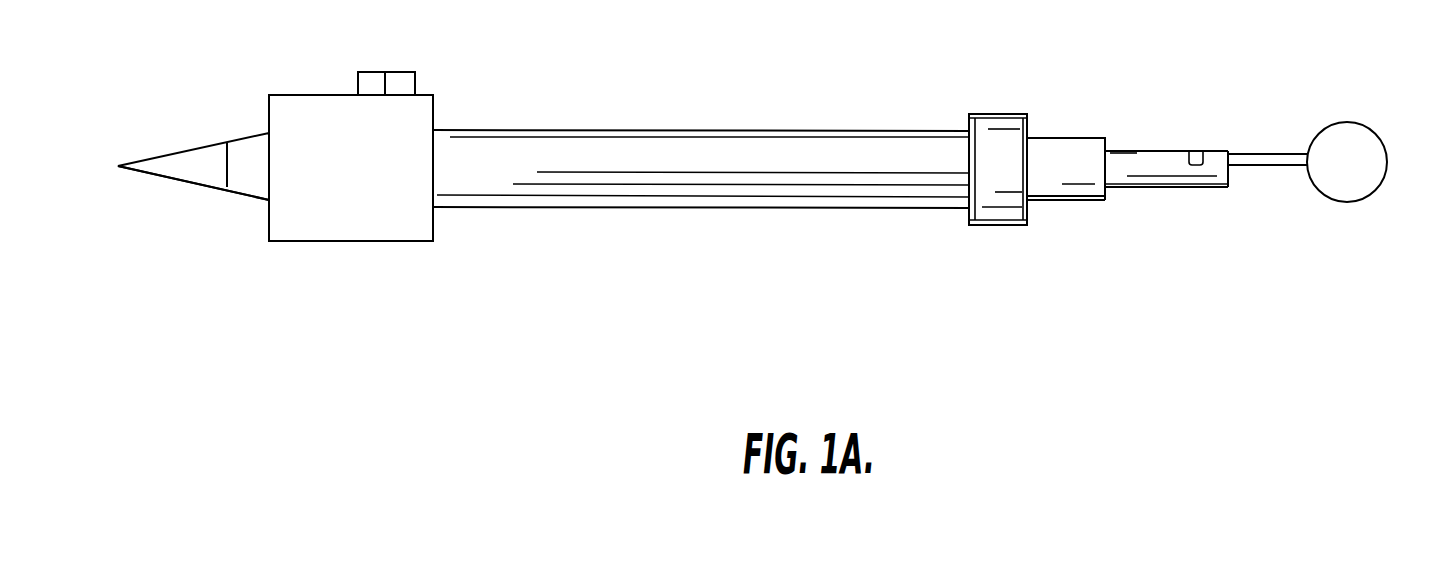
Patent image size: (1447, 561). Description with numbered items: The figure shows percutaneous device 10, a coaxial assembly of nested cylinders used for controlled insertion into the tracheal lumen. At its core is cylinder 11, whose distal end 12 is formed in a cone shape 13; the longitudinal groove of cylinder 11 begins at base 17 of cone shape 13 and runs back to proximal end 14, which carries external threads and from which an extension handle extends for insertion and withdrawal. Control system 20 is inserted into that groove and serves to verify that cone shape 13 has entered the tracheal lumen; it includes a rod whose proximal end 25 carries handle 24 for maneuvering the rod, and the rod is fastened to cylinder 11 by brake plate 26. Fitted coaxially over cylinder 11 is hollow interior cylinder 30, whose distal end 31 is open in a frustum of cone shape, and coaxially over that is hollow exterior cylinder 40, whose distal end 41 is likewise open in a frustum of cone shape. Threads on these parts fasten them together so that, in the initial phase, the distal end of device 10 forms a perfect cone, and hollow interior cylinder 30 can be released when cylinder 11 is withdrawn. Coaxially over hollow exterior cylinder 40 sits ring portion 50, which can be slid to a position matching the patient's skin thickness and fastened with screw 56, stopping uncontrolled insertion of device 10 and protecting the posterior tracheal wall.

The percutaneous device 10 is at (750, 243).
The cylinder 11 is at (1133, 190).
The distal end 12 is at (153, 160).
The cone shape 13 is at (165, 178).
The proximal end 14 is at (1222, 190).
The base 17 is at (267, 228).
The control system 20 is at (1235, 163).
The handle 24 is at (1353, 132).
The proximal end 25 is at (1303, 150).
The brake plate 26 is at (1200, 152).
The hollow interior cylinder 30 is at (644, 130).
The distal end 31 is at (1088, 200).
The hollow exterior cylinder 40 is at (1050, 138).
The distal end 41 is at (1010, 225).
The ring portion 50 is at (317, 242).
The screw 56 is at (398, 72).